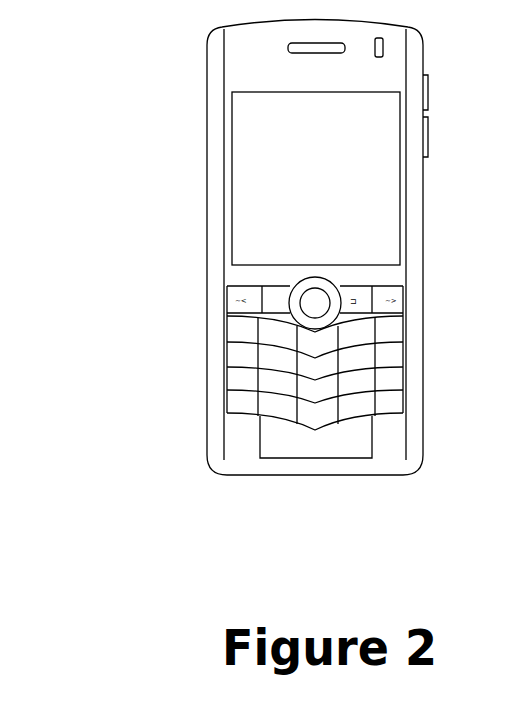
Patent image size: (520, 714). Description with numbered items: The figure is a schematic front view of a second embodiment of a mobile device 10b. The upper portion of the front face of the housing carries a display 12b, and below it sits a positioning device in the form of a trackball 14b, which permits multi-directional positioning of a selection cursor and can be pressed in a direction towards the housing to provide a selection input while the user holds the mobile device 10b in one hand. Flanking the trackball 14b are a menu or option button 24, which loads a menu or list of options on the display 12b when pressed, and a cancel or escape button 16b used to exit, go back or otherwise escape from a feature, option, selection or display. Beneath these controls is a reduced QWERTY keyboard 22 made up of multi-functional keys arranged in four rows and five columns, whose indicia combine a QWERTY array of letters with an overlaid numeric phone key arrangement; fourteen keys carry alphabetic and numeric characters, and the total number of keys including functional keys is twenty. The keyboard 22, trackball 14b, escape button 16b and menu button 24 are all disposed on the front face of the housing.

The mobile device 10b is at (110, 83).
The display 12b is at (329, 170).
The trackball 14b is at (335, 281).
The cancel or escape button 16b is at (341, 312).
The reduced QWERTY keyboard 22 is at (247, 417).
The menu or option button 24 is at (289, 306).